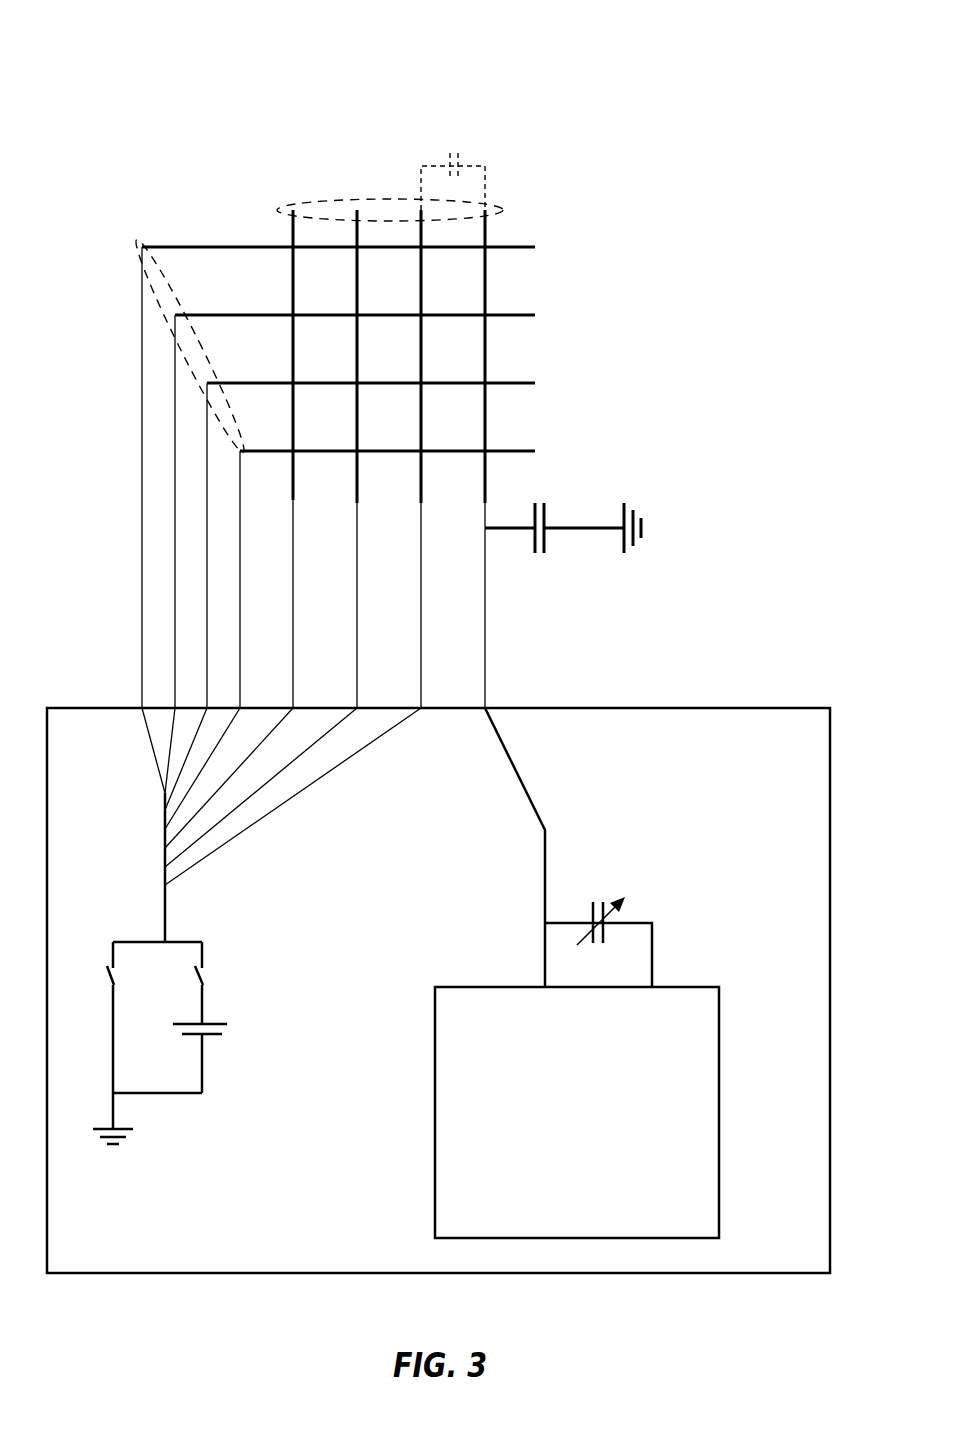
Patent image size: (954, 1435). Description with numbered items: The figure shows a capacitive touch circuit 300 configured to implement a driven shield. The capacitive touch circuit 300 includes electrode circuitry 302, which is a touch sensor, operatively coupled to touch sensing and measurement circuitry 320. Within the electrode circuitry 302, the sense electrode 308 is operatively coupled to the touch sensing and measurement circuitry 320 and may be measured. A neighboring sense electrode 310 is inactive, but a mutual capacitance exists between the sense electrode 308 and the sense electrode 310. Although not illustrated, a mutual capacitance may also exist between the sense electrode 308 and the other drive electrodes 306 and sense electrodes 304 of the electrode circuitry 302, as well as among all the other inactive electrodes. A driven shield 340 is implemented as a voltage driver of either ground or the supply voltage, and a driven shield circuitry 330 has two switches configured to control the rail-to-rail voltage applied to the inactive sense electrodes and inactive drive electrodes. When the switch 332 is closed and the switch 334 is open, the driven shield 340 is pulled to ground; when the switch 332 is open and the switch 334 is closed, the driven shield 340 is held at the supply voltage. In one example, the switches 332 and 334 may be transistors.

The capacitive touch circuit 300 is at (108, 58).
The electrode circuitry 302 is at (592, 166).
The sense electrodes 304 is at (283, 211).
The drive electrodes 306 is at (163, 246).
The sense electrode 308 is at (485, 214).
The sense electrode 310 is at (421, 212).
The touch sensing and measurement circuitry 320 is at (750, 770).
The driven shield circuitry 330 is at (202, 942).
The switch 332 is at (92, 1017).
The switch 334 is at (219, 1017).
The driven shield 340 is at (127, 786).